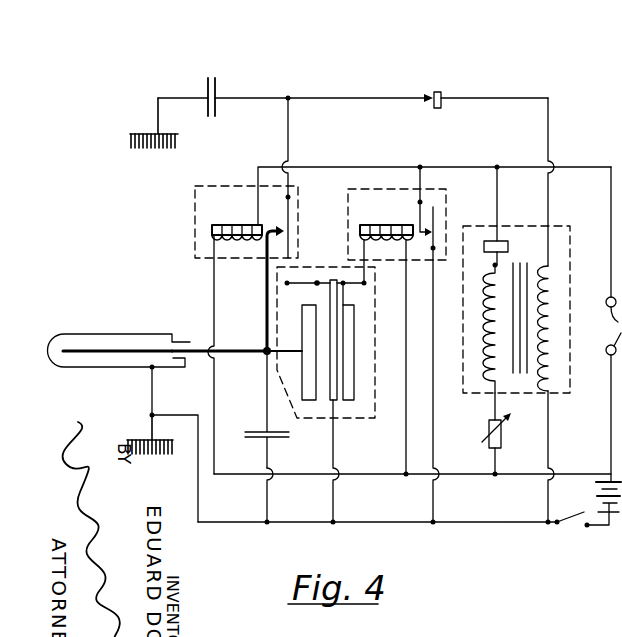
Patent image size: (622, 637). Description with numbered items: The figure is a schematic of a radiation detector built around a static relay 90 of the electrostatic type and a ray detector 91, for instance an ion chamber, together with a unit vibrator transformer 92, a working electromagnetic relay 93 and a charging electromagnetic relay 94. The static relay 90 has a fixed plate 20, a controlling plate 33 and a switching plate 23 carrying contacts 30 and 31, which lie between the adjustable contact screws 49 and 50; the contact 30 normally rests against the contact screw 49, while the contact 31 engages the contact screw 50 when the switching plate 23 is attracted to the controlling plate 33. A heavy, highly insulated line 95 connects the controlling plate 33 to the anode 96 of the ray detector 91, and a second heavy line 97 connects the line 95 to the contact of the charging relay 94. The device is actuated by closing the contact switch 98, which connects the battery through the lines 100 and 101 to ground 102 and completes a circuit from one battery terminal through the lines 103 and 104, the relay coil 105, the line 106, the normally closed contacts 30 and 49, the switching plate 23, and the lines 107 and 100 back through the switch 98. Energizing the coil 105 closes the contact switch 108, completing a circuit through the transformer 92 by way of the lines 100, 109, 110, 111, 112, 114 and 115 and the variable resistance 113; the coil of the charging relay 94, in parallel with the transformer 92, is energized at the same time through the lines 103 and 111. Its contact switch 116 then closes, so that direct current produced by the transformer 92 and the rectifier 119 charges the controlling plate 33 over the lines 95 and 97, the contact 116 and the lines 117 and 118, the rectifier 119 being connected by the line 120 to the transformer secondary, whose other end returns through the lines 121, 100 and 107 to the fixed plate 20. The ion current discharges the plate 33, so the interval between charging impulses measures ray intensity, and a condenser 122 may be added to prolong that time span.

The fixed plate 20 is at (354, 386).
The switching plate 23 is at (339, 295).
The contact 30 is at (342, 280).
The contact 31 is at (327, 291).
The controlling plate 33 is at (302, 314).
The contact screw 49 is at (345, 280).
The contact screw 50 is at (318, 282).
The static relay 90 is at (353, 424).
The ray detector 91 is at (86, 330).
The unit vibrator transformer 92 is at (565, 222).
The working electromagnetic relay 93 is at (452, 185).
The charging electromagnetic relay 94 is at (189, 200).
The heavy line 95 is at (232, 350).
The anode 96 is at (117, 349).
The heavy line 97 is at (264, 298).
The contact switch 98 is at (567, 523).
The line 100 is at (340, 523).
The line 101 is at (148, 428).
The ground 102 is at (140, 133).
The line 103 is at (449, 476).
The line 104 is at (406, 358).
The relay coil 105 is at (372, 226).
The line 106 is at (367, 250).
The line 107 is at (331, 453).
The contact switch 108 is at (436, 218).
The line 109 is at (433, 432).
The line 110 is at (420, 179).
The line 111 is at (442, 167).
The line 112 is at (499, 200).
The variable resistance 113 is at (498, 435).
The line 114 is at (496, 462).
The line 115 is at (523, 477).
The contact switch 116 is at (292, 214).
The line 117 is at (291, 130).
The line 118 is at (337, 98).
The rectifier 119 is at (440, 94).
The line 120 is at (550, 194).
The line 121 is at (549, 435).
The condenser 122 is at (258, 432).